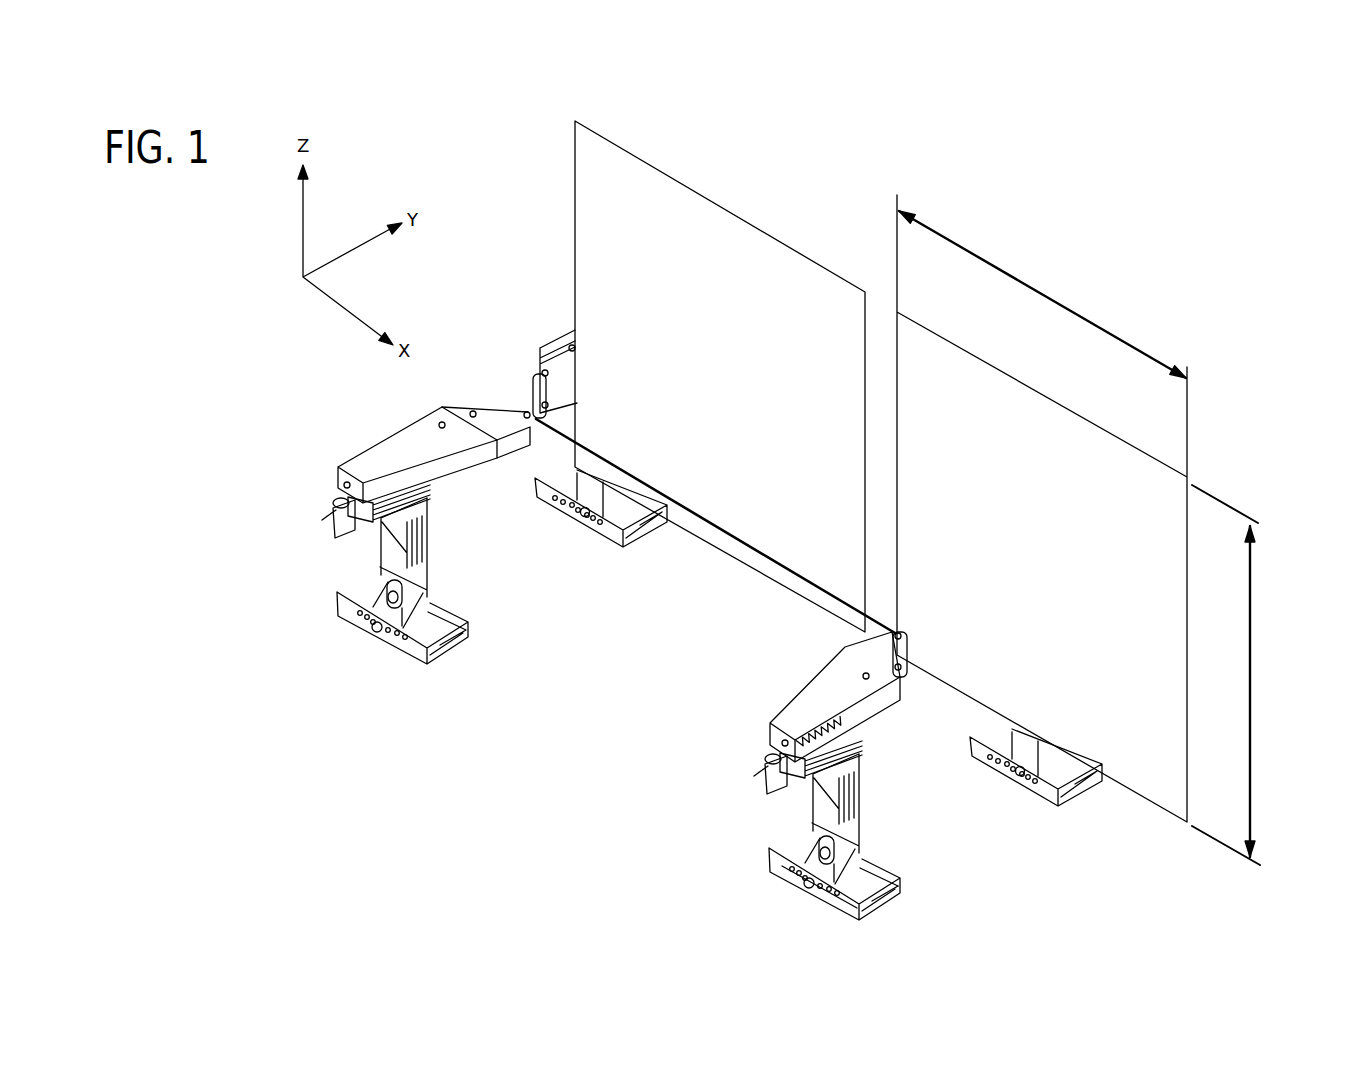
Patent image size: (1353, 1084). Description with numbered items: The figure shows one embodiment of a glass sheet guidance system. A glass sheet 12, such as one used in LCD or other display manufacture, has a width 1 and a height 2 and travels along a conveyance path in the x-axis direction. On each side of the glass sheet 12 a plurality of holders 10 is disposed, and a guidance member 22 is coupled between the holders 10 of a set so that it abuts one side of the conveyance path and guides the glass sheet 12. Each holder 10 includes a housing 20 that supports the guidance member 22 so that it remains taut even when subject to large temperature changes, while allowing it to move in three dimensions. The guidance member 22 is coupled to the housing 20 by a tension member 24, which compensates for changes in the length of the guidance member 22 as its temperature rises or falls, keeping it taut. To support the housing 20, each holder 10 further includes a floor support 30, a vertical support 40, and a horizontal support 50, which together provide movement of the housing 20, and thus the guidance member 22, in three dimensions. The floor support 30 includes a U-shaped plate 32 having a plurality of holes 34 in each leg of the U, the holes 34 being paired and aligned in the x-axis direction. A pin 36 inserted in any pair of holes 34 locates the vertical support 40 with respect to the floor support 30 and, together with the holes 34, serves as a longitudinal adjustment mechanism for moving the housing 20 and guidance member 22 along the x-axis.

The width 1 is at (1036, 291).
The height 2 is at (1252, 675).
The holder 10 is at (607, 647).
The glass sheet 12 is at (801, 303).
The housing 20 is at (830, 690).
The guidance member 22 is at (540, 405).
The tension member 24 is at (833, 727).
The floor support 30 is at (850, 885).
The U-shaped plate 32 is at (880, 900).
The holes 34 is at (903, 877).
The pin 36 is at (823, 873).
The vertical support 40 is at (865, 807).
The horizontal support 50 is at (758, 783).